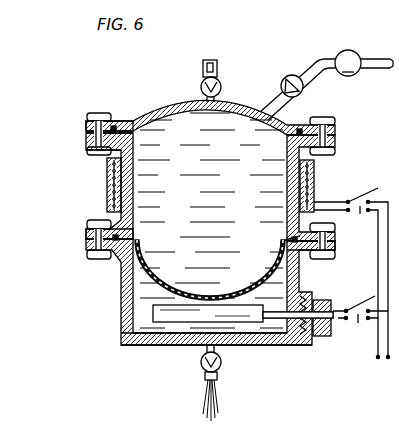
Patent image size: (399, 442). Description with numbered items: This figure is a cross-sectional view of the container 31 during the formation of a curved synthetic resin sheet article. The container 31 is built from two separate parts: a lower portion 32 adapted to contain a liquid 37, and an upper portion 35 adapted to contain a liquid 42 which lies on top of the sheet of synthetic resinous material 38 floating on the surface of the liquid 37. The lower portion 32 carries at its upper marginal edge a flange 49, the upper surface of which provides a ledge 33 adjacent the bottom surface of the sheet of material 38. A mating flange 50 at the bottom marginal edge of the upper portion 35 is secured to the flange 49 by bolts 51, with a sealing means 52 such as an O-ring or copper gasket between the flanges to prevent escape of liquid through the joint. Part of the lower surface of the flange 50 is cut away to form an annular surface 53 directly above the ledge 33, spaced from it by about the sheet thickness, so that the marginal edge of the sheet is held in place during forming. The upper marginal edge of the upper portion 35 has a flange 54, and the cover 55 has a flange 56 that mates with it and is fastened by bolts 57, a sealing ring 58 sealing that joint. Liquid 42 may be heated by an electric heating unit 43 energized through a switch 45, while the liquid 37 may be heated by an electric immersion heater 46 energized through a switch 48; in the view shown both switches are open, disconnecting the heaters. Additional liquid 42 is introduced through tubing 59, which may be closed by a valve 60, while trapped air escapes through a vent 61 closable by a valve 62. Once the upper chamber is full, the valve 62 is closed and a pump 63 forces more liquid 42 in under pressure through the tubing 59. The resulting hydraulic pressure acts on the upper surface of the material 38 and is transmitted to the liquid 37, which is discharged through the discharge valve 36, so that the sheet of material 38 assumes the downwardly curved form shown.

The container 31 is at (68, 235).
The lower portion 32 is at (125, 316).
The ledge 33 is at (122, 258).
The upper portion 35 is at (121, 222).
The valve 36 is at (198, 360).
The liquid 37 is at (157, 339).
The synthetic resinous material 38 is at (287, 240).
The liquid 42 is at (206, 130).
The electric heating unit 43 is at (318, 179).
The switch 45 is at (367, 273).
The electric immersion heater 46 is at (238, 314).
The switch 48 is at (357, 321).
The flange 49 is at (88, 247).
The flange 50 is at (98, 232).
The bolts 51 is at (97, 259).
The sealing means 52 is at (303, 258).
The annular surface 53 is at (132, 231).
The flange 54 is at (86, 137).
The cover 55 is at (167, 113).
The flange 56 is at (87, 127).
The bolts 57 is at (100, 113).
The sealing ring 58 is at (300, 127).
The tubing 59 is at (325, 60).
The valve 60 is at (290, 76).
The vent 61 is at (216, 64).
The valve 62 is at (221, 87).
The pump 63 is at (357, 52).